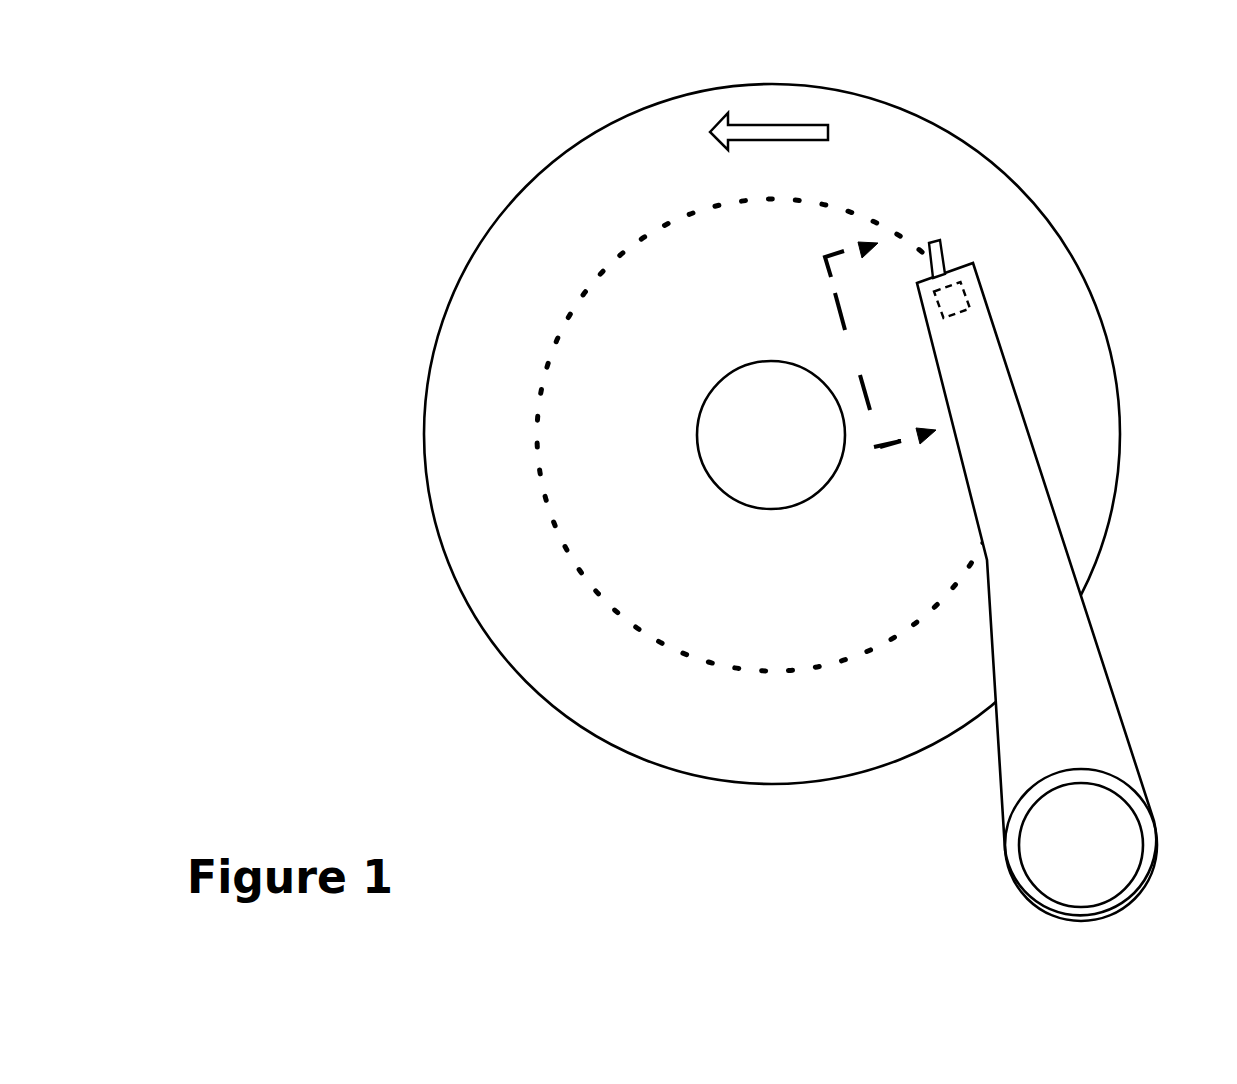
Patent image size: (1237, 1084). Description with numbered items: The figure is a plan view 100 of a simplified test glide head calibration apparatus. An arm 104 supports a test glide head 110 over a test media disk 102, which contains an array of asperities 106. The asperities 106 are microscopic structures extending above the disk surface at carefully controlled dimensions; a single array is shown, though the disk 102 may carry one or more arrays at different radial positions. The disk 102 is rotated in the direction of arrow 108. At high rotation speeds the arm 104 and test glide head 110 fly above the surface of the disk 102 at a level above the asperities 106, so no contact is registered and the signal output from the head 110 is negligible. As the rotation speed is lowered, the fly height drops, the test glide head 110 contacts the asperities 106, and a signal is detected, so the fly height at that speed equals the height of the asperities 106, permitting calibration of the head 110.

The plan view 100 is at (1058, 126).
The test media disk 102 is at (557, 284).
The arm 104 is at (1078, 684).
The asperities 106 is at (540, 417).
The arrow 108 is at (790, 123).
The test glide head 110 is at (967, 292).